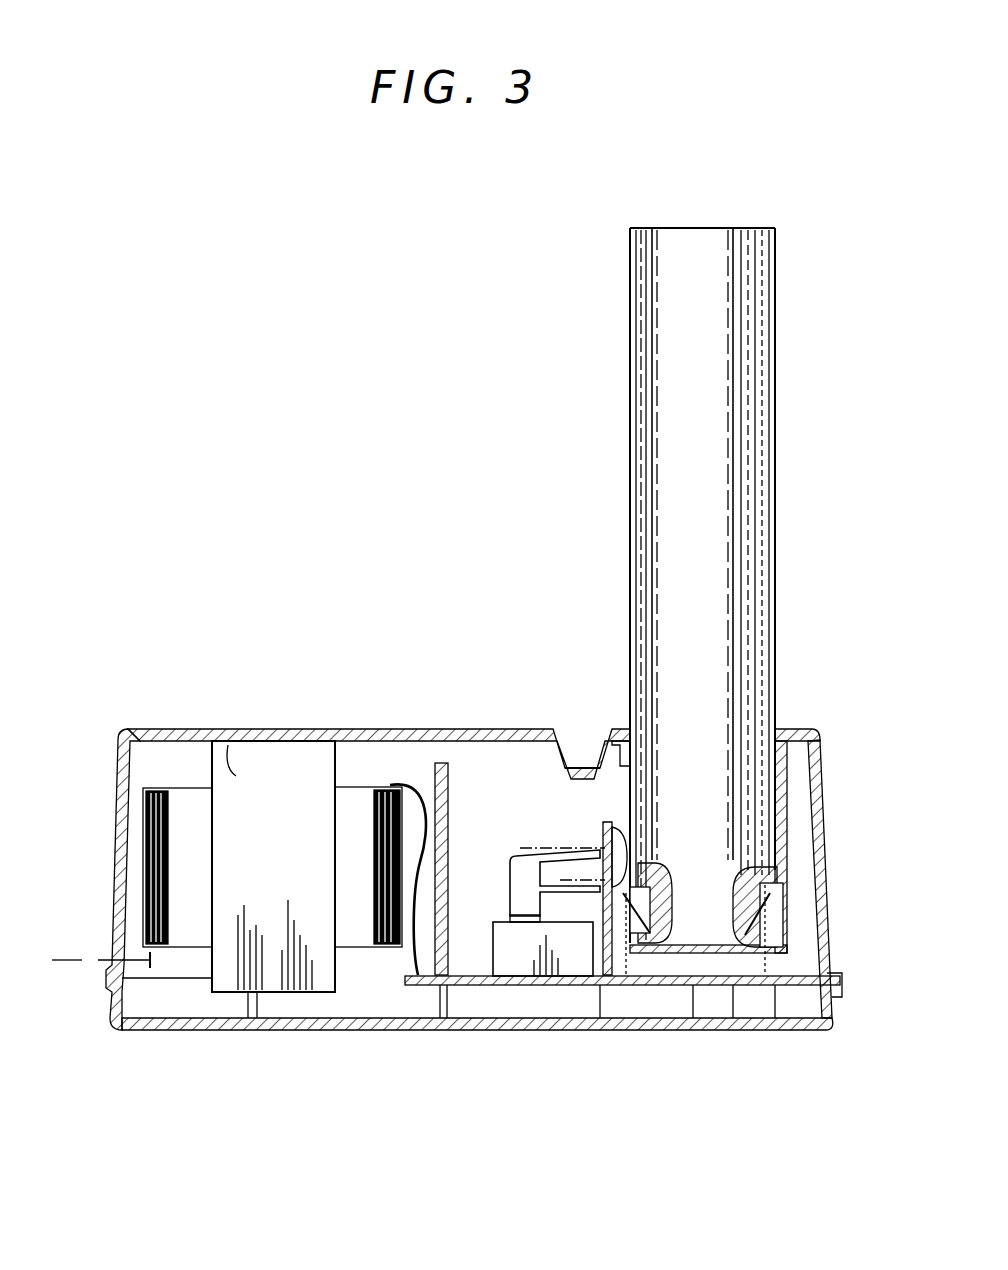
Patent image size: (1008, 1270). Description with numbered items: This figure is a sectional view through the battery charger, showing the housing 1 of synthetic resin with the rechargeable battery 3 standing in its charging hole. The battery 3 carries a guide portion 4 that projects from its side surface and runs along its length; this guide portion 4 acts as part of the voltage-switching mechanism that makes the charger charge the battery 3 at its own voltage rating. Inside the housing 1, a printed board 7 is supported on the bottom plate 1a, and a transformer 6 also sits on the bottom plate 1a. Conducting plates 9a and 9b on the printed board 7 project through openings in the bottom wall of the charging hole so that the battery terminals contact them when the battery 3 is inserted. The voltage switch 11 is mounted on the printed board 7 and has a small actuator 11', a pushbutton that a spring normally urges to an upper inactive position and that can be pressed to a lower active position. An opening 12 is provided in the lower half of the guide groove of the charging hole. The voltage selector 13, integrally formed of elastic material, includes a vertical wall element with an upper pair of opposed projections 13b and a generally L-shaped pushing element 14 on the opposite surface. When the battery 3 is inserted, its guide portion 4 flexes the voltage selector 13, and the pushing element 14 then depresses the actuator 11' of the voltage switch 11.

The housing 1 is at (286, 728).
The bottom plate 1a is at (300, 1031).
The rechargeable battery 3 is at (765, 400).
The guide portion 4 is at (630, 372).
The transformer 6 is at (238, 775).
The printed board 7 is at (690, 986).
The conducting plate 9a is at (770, 905).
The conducting plate 9b is at (610, 958).
The voltage switch 11 is at (543, 1007).
The actuator 11' is at (495, 884).
The opening 12 is at (606, 830).
The voltage selector 13 is at (562, 828).
The upper pair of opposed projections 13b is at (585, 770).
The pushing element 14 is at (530, 856).